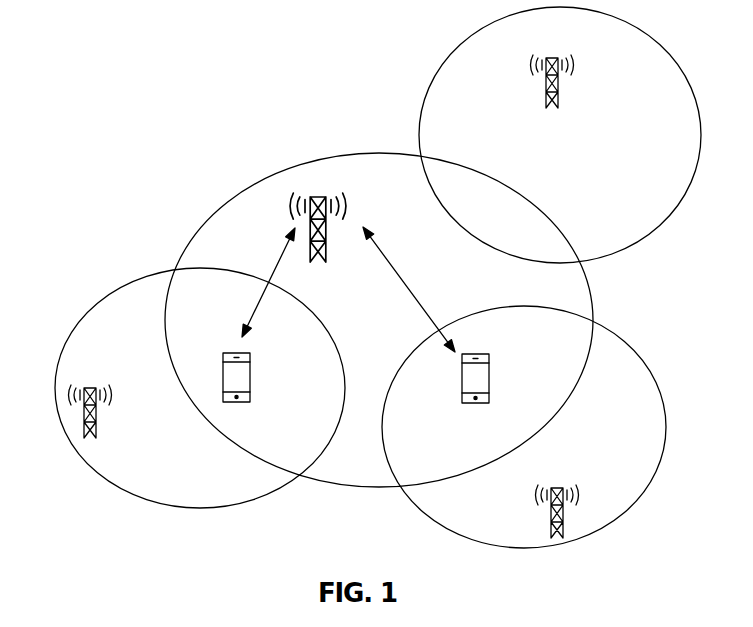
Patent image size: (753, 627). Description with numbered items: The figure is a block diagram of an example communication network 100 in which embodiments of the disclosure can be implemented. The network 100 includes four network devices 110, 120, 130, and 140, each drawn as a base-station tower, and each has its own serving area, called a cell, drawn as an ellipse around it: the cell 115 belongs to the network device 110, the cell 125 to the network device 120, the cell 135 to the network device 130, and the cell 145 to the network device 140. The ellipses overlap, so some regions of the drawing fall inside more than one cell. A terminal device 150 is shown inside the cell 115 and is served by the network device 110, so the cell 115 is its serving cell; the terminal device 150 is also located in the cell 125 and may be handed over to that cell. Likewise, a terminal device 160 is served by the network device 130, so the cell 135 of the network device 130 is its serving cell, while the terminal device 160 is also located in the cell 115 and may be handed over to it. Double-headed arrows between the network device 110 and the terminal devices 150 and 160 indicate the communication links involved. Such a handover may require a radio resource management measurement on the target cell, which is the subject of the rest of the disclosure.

The communication network 100 is at (134, 36).
The network device 110 is at (318, 195).
The cell 115 is at (220, 207).
The network device 120 is at (560, 490).
The cell 125 is at (626, 345).
The network device 130 is at (92, 390).
The cell 135 is at (88, 313).
The network device 140 is at (554, 60).
The cell 145 is at (432, 72).
The terminal device 150 is at (478, 354).
The terminal device 160 is at (240, 352).